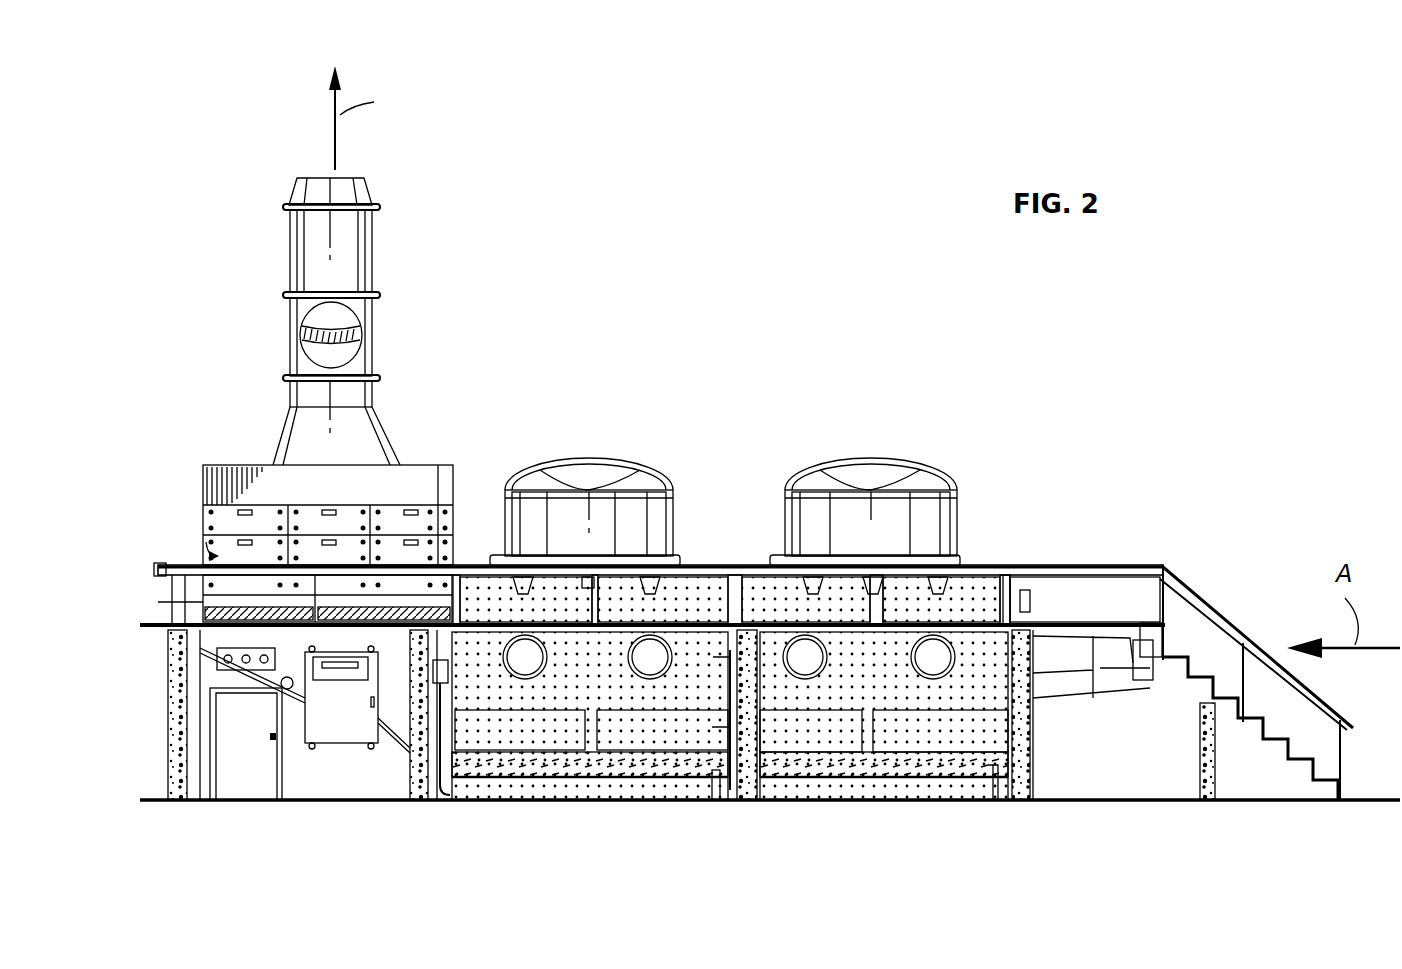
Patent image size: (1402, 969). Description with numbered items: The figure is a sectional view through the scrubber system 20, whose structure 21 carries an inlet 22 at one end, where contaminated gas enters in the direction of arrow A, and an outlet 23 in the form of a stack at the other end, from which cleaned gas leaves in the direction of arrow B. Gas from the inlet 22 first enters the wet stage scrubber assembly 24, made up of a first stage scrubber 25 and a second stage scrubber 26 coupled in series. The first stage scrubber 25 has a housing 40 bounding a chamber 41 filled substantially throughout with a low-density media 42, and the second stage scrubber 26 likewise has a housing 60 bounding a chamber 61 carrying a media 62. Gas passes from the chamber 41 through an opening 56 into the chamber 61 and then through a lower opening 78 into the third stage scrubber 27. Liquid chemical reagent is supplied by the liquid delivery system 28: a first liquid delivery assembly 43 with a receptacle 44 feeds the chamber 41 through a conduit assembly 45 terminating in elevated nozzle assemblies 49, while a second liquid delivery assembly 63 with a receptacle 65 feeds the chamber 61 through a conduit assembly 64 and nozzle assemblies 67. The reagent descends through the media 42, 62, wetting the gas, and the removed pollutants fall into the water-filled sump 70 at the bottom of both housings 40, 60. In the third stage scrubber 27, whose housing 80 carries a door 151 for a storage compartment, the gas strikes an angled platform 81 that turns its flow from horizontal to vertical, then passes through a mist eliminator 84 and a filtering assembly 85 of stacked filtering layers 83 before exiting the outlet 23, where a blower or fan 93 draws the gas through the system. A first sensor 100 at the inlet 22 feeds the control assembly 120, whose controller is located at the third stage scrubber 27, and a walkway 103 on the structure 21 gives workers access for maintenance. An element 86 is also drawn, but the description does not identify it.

The scrubber system 20 is at (745, 418).
The structure 21 is at (228, 458).
The inlet 22 is at (1122, 668).
The outlet 23 is at (352, 238).
The wet stage scrubber assembly 24 is at (742, 548).
The first stage scrubber 25 is at (917, 745).
The second stage scrubber 26 is at (664, 744).
The third stage scrubber 27 is at (360, 790).
The liquid delivery system 28 is at (593, 454).
The housing 40 is at (1047, 570).
The chamber 41 is at (890, 690).
The media 42 is at (1023, 573).
The first liquid delivery assembly 43 is at (928, 472).
The receptacle 44 is at (808, 492).
The conduit assembly 45 is at (893, 553).
The nozzle assemblies 49 is at (815, 598).
The opening 56 is at (742, 780).
The housing 60 is at (470, 575).
The chamber 61 is at (606, 690).
The media 62 is at (670, 610).
The second liquid delivery assembly 63 is at (518, 478).
The conduit assembly 64 is at (573, 553).
The receptacle 65 is at (615, 470).
The nozzle assemblies 67 is at (525, 578).
The sump 70 is at (645, 793).
The opening 78 is at (462, 724).
The housing 80 is at (388, 505).
The angled platform 81 is at (282, 690).
The filtering layers 83 is at (402, 545).
The mist eliminator 84 is at (165, 592).
The filtering assembly 85 is at (203, 545).
The pipe 86 is at (437, 797).
The fan 93 is at (368, 327).
The first sensor 100 is at (1035, 605).
The walkway 103 is at (172, 626).
The control assembly 120 is at (325, 732).
The door 151 is at (232, 783).